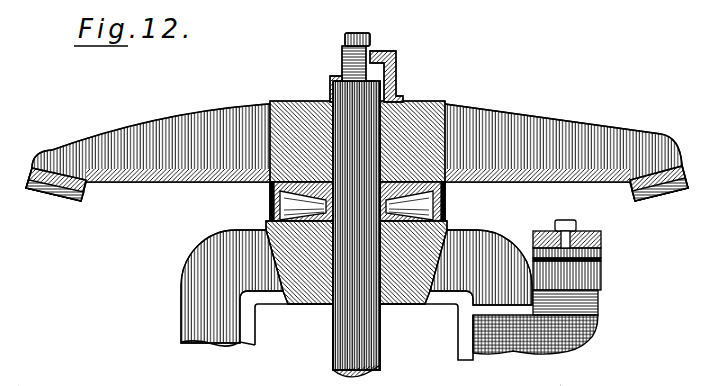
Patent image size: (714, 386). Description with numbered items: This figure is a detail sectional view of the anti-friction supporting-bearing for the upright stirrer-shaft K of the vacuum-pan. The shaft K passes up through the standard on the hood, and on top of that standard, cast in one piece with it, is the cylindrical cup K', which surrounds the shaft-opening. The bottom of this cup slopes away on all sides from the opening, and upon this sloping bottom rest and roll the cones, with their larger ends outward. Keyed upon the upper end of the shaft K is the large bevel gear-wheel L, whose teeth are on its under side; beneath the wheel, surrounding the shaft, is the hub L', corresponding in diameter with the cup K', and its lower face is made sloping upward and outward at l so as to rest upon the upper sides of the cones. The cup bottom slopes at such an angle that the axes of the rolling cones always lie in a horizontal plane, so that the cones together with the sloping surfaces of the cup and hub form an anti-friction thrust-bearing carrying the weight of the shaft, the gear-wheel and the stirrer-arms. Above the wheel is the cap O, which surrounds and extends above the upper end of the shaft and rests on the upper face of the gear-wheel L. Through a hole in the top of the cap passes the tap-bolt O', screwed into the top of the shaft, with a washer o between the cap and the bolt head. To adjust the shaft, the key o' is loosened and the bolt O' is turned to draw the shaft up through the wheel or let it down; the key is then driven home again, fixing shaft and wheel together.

The bevel gear-wheel L is at (601, 113).
The hub L′ is at (262, 186).
The sloping lower face of hub l is at (266, 192).
The sloping bottom of cup k is at (262, 211).
The cylindrical cup K′ is at (262, 200).
The stirrer-shaft K is at (373, 337).
The washer o is at (360, 46).
The tap-bolt O′ is at (362, 35).
The cap O is at (389, 60).
The key o′ is at (322, 74).